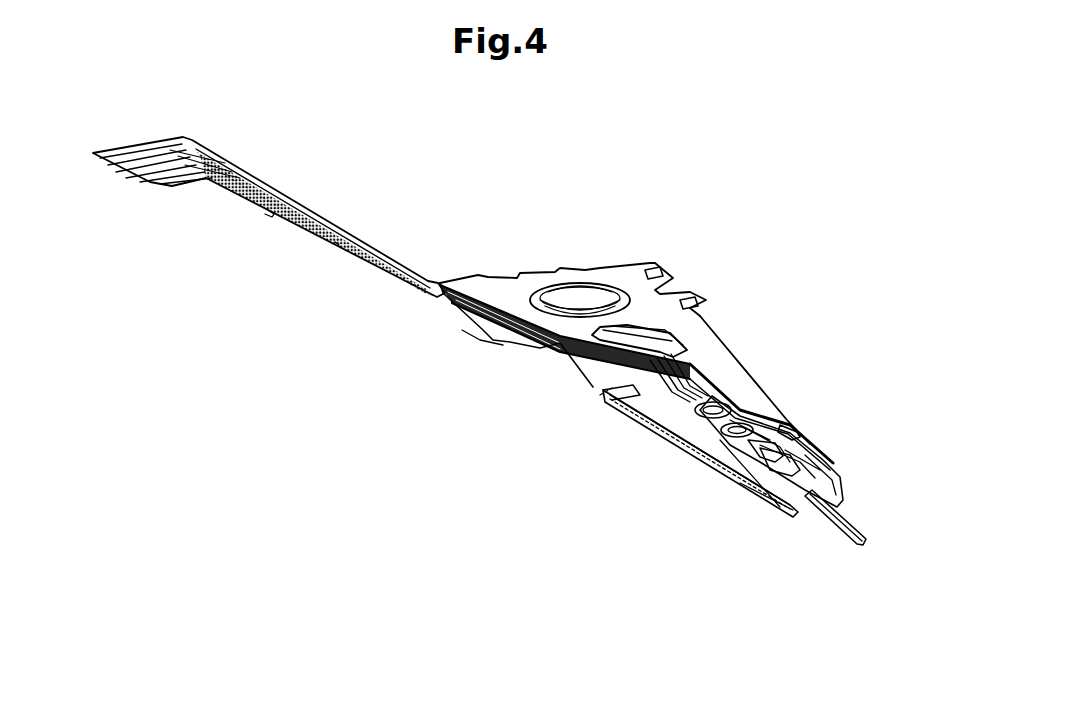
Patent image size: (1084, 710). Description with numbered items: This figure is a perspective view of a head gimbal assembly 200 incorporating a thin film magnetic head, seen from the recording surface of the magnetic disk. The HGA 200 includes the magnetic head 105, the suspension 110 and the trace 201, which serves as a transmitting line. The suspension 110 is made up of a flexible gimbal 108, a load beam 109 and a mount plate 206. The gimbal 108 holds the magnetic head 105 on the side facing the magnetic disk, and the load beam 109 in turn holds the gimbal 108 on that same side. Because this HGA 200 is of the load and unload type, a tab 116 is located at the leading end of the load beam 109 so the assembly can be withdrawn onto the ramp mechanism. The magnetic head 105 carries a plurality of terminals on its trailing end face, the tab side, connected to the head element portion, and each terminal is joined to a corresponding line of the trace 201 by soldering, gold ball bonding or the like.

The head gimbal assembly 200 is at (503, 190).
The trace 201 is at (363, 237).
The mount plate 206 is at (620, 266).
The suspension 110 is at (800, 317).
The load beam 109 is at (753, 387).
The gimbal 108 is at (795, 427).
The magnetic head 105 is at (726, 465).
The tab 116 is at (857, 538).